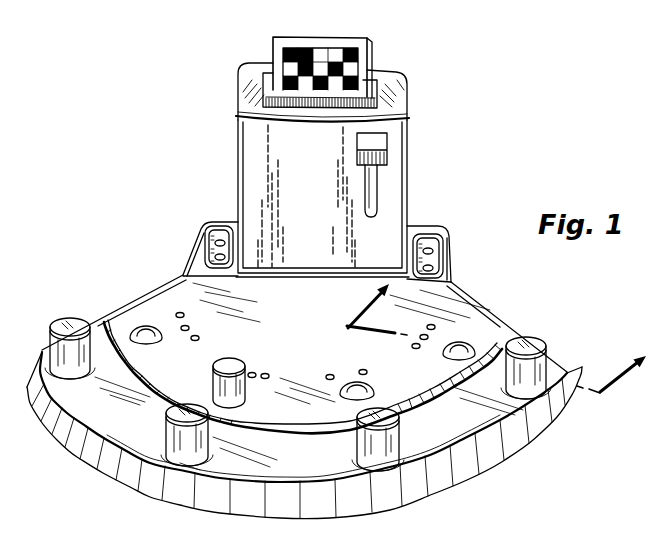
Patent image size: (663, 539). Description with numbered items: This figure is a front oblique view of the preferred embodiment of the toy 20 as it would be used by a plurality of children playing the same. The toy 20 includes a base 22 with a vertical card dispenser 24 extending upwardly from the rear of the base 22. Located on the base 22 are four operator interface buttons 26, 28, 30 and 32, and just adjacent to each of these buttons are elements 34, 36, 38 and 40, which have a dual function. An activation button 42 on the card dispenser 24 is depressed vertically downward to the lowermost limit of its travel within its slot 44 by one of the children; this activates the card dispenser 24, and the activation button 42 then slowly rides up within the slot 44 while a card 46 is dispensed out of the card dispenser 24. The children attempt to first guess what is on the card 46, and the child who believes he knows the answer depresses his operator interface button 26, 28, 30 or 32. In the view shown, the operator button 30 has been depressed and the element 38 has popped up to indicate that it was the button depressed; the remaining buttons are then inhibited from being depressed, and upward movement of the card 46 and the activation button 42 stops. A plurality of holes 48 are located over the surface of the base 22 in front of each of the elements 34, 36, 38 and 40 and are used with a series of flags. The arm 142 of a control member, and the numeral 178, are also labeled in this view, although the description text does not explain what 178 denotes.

The toy 20 is at (541, 178).
The base 22 is at (577, 377).
The card dispenser 24 is at (447, 105).
The operator interface button 26 is at (528, 340).
The operator interface button 28 is at (378, 452).
The operator interface button 30 is at (182, 447).
The operator interface button 32 is at (78, 366).
The element 34 is at (463, 340).
The element 36 is at (365, 386).
The element 38 is at (238, 360).
The element 40 is at (147, 342).
The activation button 42 is at (390, 142).
The slot 44 is at (381, 197).
The card 46 is at (373, 50).
The holes 48 is at (432, 324).
The card slot 178 is at (350, 85).
The arm 142 is at (497, 458).